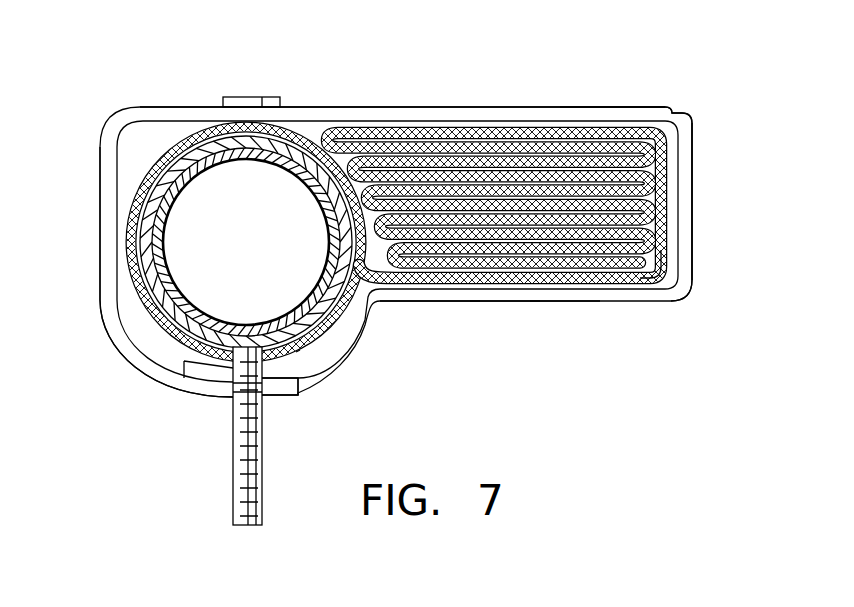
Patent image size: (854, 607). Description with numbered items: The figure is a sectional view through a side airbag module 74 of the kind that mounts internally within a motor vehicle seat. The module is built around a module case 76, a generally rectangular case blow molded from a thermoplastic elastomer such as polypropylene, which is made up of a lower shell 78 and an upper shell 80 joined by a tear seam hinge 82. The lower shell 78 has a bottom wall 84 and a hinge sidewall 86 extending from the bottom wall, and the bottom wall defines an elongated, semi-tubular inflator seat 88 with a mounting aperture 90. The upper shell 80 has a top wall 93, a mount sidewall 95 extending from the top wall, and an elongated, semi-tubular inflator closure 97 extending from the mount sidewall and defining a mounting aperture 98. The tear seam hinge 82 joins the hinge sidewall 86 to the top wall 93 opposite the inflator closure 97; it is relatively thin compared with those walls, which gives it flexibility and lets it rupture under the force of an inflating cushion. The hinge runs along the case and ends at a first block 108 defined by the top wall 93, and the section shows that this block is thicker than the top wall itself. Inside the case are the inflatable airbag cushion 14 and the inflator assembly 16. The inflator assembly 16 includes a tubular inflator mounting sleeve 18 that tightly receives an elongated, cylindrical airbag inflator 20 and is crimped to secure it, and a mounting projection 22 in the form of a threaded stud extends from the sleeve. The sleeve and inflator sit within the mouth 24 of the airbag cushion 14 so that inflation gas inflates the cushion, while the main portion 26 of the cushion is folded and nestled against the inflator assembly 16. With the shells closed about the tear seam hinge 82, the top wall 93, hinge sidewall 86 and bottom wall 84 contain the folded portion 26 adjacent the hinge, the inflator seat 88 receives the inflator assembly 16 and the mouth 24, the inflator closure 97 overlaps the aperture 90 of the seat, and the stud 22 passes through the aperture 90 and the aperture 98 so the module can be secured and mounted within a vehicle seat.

The side airbag module 74 is at (440, 46).
The first block 108 is at (248, 96).
The upper shell 80 is at (366, 102).
The top wall 93 is at (612, 104).
The tear seam hinge 82 is at (675, 115).
The hinge sidewall 86 is at (694, 167).
The inflatable airbag cushion 14 is at (670, 239).
The main portion of the airbag cushion 26 is at (660, 282).
The mount sidewall 95 is at (101, 198).
The airbag inflator 20 is at (127, 284).
The inflator mounting sleeve 18 is at (150, 312).
The inflator assembly 16 is at (163, 320).
The inflator closure 97 is at (134, 368).
The mounting aperture 90 is at (226, 386).
The mounting aperture 98 is at (240, 391).
The mouth of the airbag cushion 24 is at (344, 338).
The bottom wall 84 is at (413, 303).
The module case 76 is at (496, 312).
The lower shell 78 is at (553, 313).
The inflator seat 88 is at (312, 377).
The mounting projection 22 is at (234, 488).